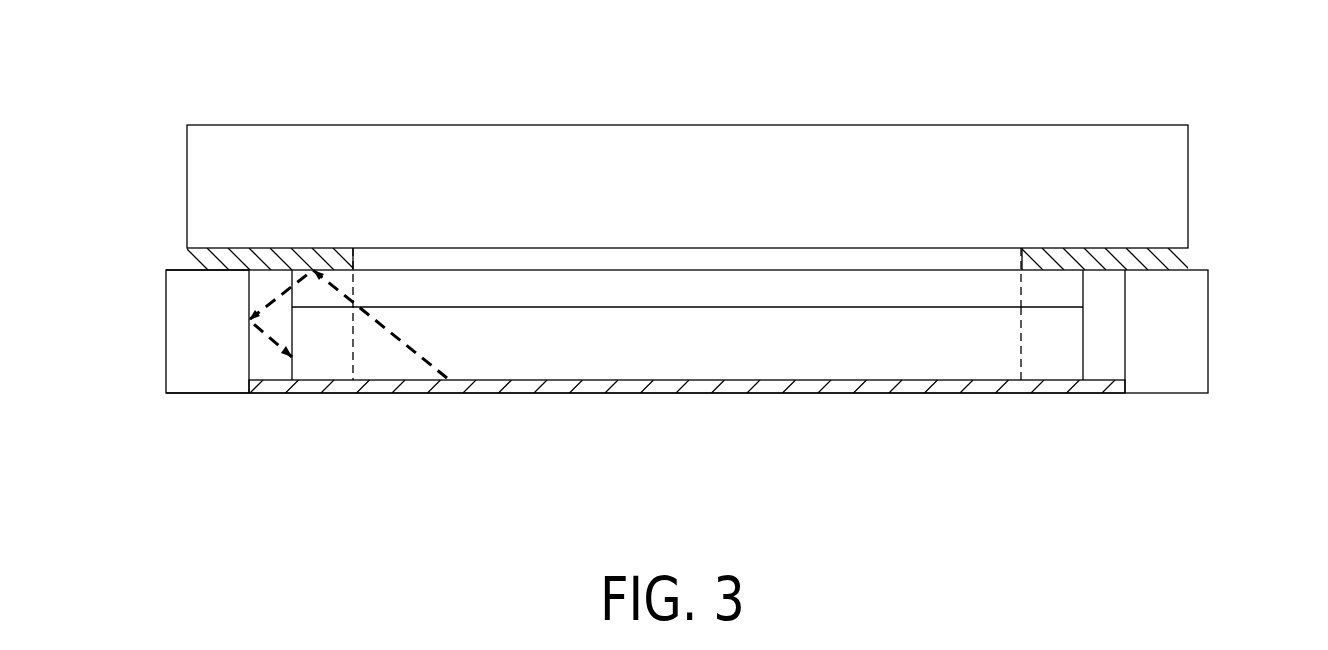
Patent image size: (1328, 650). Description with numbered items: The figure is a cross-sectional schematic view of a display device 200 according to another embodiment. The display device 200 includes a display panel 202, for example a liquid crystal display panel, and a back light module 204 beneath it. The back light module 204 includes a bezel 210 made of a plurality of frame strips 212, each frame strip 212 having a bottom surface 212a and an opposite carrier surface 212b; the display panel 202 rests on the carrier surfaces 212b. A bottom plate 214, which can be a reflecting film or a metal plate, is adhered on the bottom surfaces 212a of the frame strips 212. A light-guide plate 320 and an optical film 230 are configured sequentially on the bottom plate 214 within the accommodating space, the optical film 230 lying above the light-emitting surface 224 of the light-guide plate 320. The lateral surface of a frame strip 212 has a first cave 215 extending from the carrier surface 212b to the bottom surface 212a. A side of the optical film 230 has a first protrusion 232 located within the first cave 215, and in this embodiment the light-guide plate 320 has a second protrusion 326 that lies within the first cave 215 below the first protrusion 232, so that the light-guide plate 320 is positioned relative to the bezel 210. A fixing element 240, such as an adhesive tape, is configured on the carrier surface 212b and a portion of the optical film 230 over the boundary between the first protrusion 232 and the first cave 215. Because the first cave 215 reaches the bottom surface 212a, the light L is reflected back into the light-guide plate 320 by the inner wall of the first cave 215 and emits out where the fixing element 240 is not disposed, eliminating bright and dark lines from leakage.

The display device 200 is at (1320, 512).
The display panel 202 is at (1177, 152).
The back light module 204 is at (1227, 248).
The bezel 210 is at (136, 436).
The frame strip 212 is at (177, 327).
The bottom surface 212a is at (207, 406).
The carrier surface 212b is at (181, 258).
The bottom plate 214 is at (660, 385).
The first cave 215 is at (1101, 354).
The light-emitting surface 224 is at (789, 296).
The optical film 230 is at (558, 283).
The first protrusion 232 is at (1057, 293).
The fixing element 240 is at (1153, 257).
The light-guide plate 320 is at (522, 367).
The second protrusion 326 is at (1037, 340).
The light L is at (429, 366).